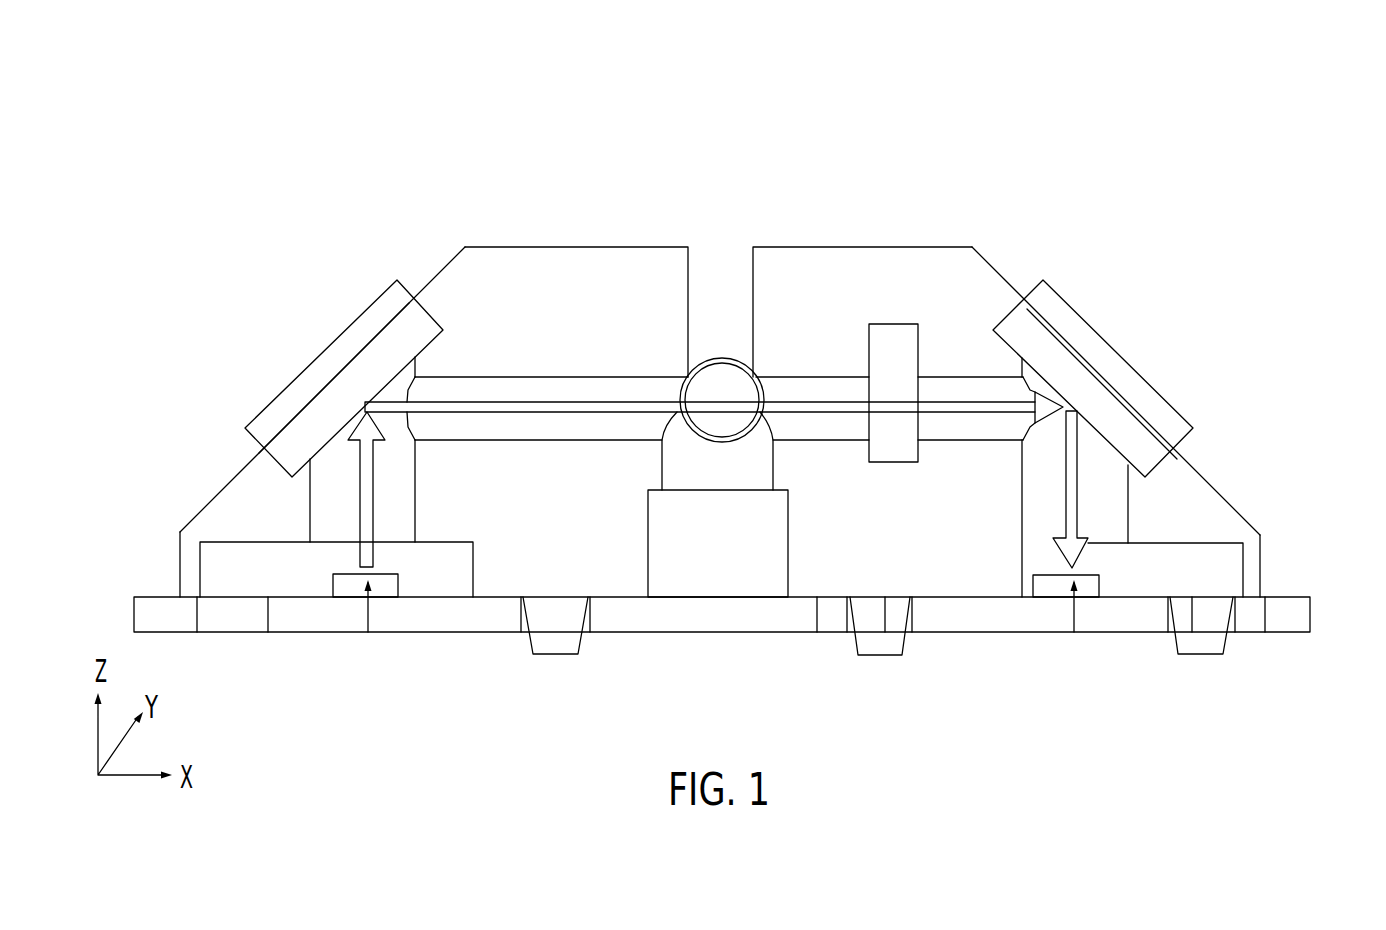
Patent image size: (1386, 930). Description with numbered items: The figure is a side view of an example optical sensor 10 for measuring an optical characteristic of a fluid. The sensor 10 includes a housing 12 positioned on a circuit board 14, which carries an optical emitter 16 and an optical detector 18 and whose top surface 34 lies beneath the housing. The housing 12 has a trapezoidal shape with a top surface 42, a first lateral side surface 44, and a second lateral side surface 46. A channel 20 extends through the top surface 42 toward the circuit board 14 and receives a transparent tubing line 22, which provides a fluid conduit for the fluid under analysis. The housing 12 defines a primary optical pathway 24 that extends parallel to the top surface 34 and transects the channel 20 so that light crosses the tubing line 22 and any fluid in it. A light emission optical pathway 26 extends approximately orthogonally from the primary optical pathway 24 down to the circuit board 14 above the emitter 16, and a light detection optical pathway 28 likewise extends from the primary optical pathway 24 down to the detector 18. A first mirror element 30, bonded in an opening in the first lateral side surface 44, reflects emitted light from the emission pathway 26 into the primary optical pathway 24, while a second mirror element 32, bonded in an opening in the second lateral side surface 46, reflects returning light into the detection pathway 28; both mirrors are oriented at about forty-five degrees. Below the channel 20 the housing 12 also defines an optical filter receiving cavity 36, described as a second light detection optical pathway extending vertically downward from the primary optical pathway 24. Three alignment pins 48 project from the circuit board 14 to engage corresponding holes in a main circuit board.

The optical sensor 10 is at (749, 368).
The housing 12 is at (720, 373).
The circuit board 14 is at (1310, 613).
The optical emitter 16 is at (353, 590).
The optical detector 18 is at (1047, 588).
The channel 20 is at (745, 380).
The transparent tubing line 22 is at (722, 358).
The primary optical pathway 24 is at (465, 442).
The light emission optical pathway 26 is at (308, 515).
The light detection optical pathway 28 is at (1130, 508).
The first mirror element 30 is at (320, 356).
The second mirror element 32 is at (1122, 357).
The top surface of circuit board 34 is at (1287, 595).
The optical filter receiving cavity 36 is at (648, 545).
The top surface 42 is at (537, 247).
The first lateral side surface 44 is at (437, 275).
The second lateral side surface 46 is at (992, 267).
The alignment pin 48 is at (1200, 645).